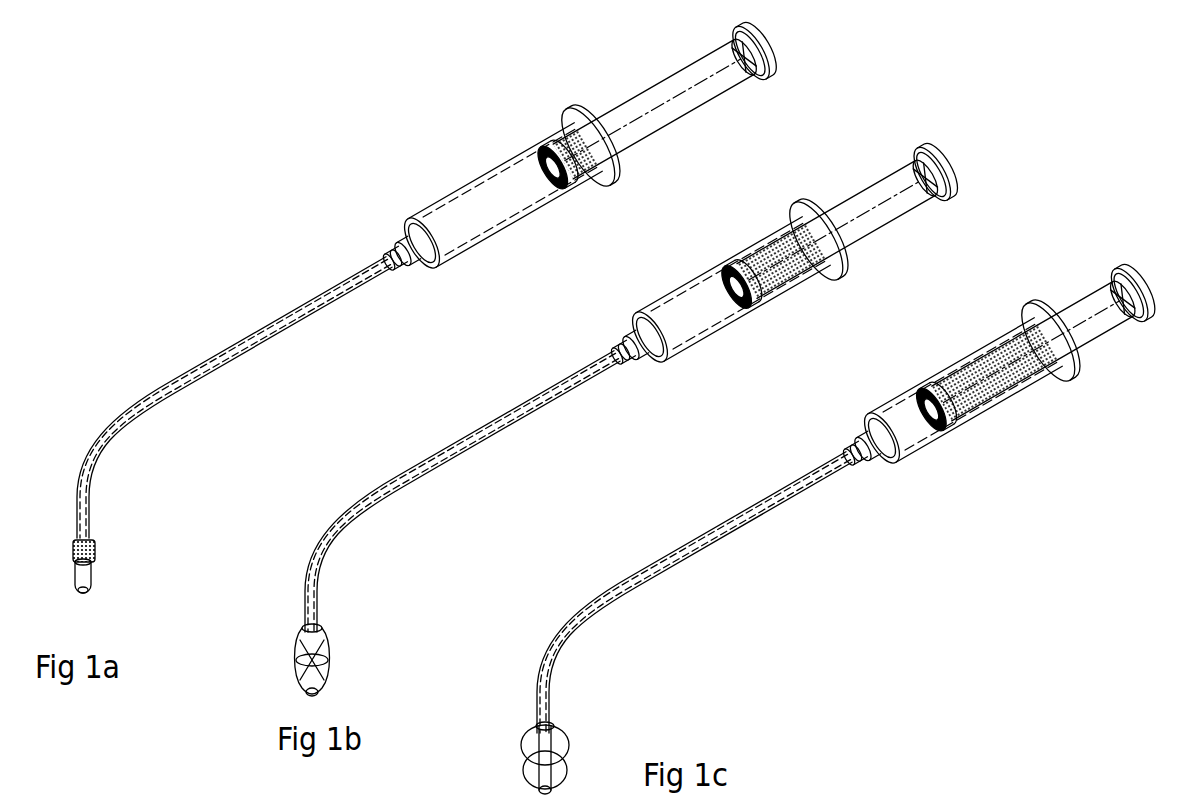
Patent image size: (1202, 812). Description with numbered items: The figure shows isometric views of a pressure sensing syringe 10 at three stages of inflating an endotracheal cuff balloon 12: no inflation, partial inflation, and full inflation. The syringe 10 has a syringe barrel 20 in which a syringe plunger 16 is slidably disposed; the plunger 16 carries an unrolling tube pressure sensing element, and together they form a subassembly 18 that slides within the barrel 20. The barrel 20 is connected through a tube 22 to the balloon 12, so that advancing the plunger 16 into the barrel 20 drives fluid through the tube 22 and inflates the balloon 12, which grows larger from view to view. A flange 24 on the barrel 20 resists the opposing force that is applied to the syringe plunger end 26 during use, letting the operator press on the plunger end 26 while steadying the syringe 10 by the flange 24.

In FIG. 1A, the pressure sensing syringe 10 is at (428, 151).
In FIG. 1B, the pressure sensing syringe 10 is at (628, 270).
In FIG. 1C, the pressure sensing syringe 10 is at (871, 374).
In FIG. 1A, the endotracheal cuff balloon 12 is at (96, 545).
In FIG. 1B, the endotracheal cuff balloon 12 is at (320, 628).
In FIG. 1C, the endotracheal cuff balloon 12 is at (560, 722).
In FIG. 1A, the syringe plunger 16 is at (614, 103).
In FIG. 1B, the syringe plunger 16 is at (820, 218).
In FIG. 1C, the syringe plunger 16 is at (1010, 320).
In FIG. 1A, the subassembly 18 is at (722, 120).
In FIG. 1B, the subassembly 18 is at (906, 241).
In FIG. 1C, the subassembly 18 is at (1113, 359).
In FIG. 1A, the syringe barrel 20 is at (481, 221).
In FIG. 1B, the syringe barrel 20 is at (713, 308).
In FIG. 1C, the syringe barrel 20 is at (952, 418).
In FIG. 1A, the tube 22 is at (290, 315).
In FIG. 1B, the tube 22 is at (507, 413).
In FIG. 1C, the tube 22 is at (740, 512).
In FIG. 1A, the flange 24 is at (588, 186).
In FIG. 1B, the flange 24 is at (818, 287).
In FIG. 1C, the flange 24 is at (1030, 390).
In FIG. 1A, the syringe plunger end 26 is at (753, 23).
In FIG. 1B, the syringe plunger end 26 is at (934, 150).
In FIG. 1C, the syringe plunger end 26 is at (1130, 267).